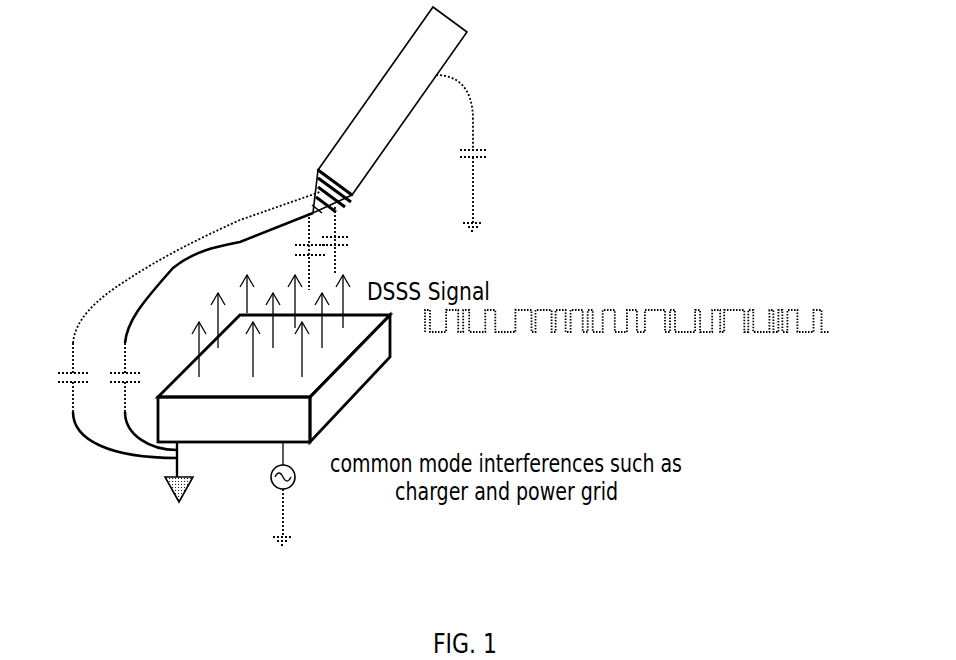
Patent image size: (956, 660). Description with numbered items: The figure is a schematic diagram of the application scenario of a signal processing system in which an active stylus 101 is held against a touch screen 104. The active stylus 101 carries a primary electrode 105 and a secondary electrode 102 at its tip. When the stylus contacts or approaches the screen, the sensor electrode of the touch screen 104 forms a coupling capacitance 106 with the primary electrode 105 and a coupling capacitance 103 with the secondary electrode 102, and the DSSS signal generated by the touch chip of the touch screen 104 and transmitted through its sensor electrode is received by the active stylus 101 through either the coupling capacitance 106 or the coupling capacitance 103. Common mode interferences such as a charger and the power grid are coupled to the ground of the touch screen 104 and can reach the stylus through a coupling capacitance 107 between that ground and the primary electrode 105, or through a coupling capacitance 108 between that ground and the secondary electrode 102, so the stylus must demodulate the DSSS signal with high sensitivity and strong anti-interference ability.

The active stylus 101 is at (467, 32).
The secondary electrode 102 is at (318, 192).
The coupling capacitance 103 is at (358, 241).
The touch screen 104 is at (390, 357).
The primary electrode 105 is at (315, 212).
The coupling capacitance 106 is at (287, 251).
The coupling capacitance 107 is at (211, 331).
The coupling capacitance 108 is at (189, 325).